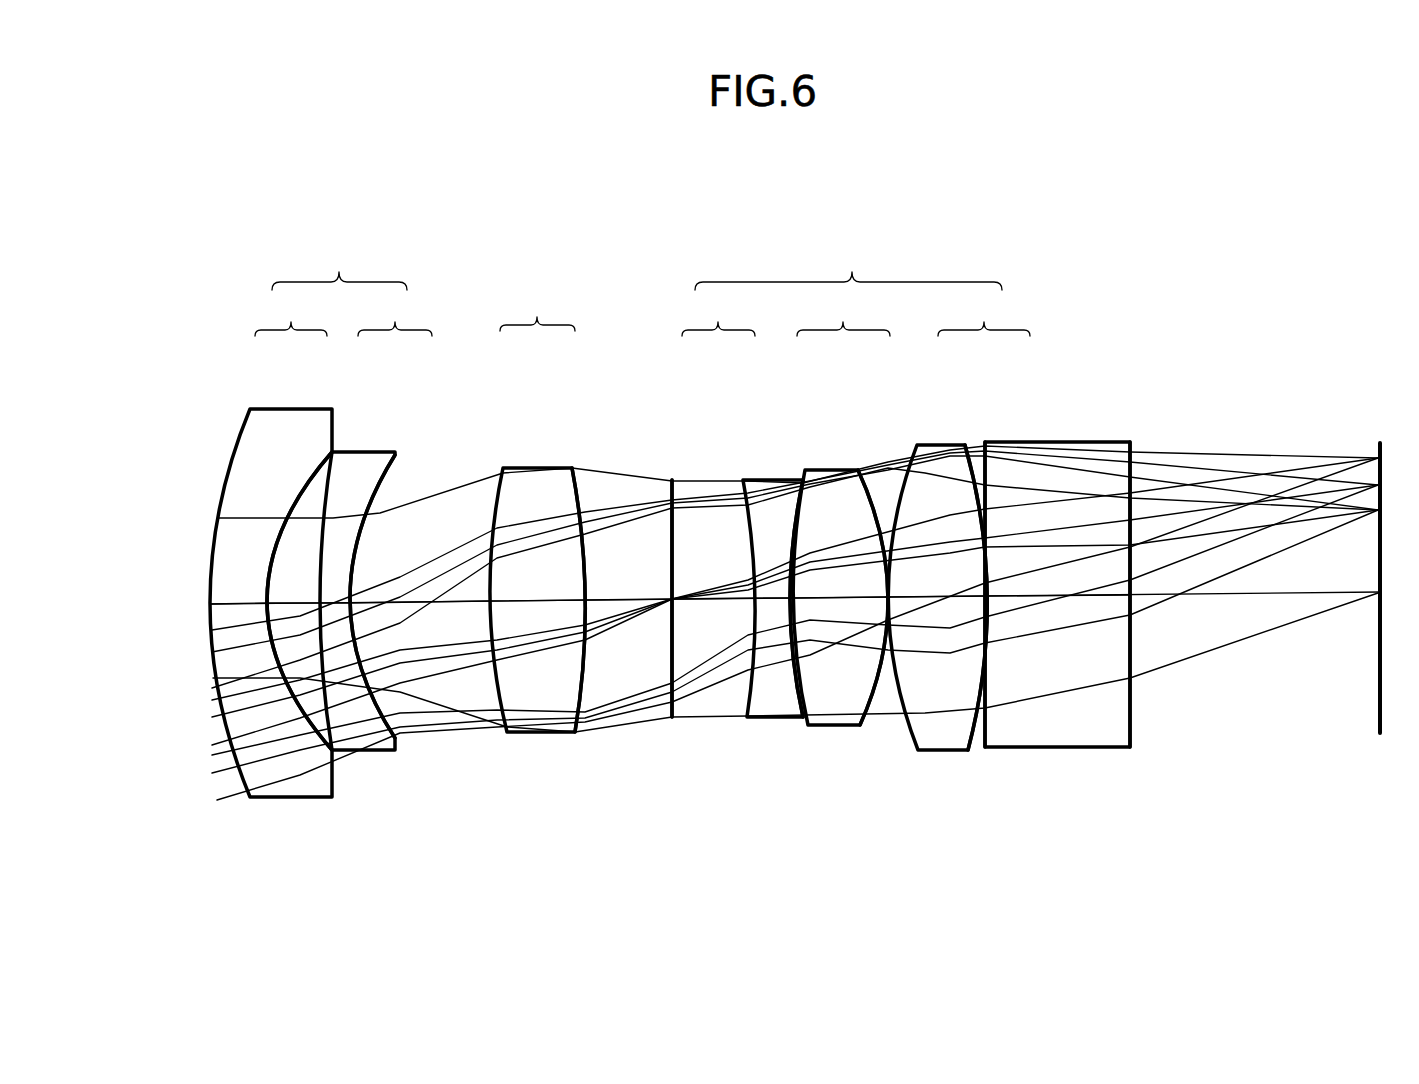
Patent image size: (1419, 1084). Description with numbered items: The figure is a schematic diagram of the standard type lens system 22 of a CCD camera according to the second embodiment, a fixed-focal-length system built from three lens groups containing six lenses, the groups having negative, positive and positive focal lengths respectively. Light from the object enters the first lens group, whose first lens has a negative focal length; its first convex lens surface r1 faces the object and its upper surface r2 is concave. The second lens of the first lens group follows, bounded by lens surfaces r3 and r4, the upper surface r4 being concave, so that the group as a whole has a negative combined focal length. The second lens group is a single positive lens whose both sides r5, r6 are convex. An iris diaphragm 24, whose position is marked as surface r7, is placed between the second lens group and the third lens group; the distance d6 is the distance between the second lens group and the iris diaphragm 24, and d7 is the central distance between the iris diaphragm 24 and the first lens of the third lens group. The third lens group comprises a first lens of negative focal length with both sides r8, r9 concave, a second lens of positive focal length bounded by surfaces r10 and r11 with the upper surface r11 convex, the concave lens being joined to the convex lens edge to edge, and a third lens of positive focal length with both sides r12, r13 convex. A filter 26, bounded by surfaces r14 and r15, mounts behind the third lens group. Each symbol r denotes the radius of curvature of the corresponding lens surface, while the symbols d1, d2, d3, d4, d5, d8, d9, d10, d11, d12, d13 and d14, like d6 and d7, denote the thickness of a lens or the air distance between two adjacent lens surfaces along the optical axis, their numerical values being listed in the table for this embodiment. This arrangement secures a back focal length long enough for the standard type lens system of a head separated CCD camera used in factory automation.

The standard type lens system 22 is at (497, 199).
The iris diaphragm 24 is at (672, 720).
The filter 26 is at (1107, 745).
The first convex lens surface r1 is at (202, 512).
The upper surface of first lens r2 is at (262, 585).
The lens surface r3 is at (318, 585).
The upper surface of second lens r4 is at (349, 572).
The lens surface r5 is at (488, 587).
The lens surface r6 is at (597, 580).
The lens surface r7 is at (664, 575).
The lens surface r8 is at (740, 565).
The lens surface r9 is at (787, 555).
The lens surface r10 is at (808, 560).
The upper surface of second lens of third group r11 is at (888, 560).
The lens surface r12 is at (890, 553).
The lens surface r13 is at (967, 497).
The lens surface r14 is at (985, 495).
The lens surface r15 is at (1130, 531).
The thickness between adjacent lens surfaces d1 is at (240, 607).
The distance between adjacent lens surfaces d2 is at (290, 607).
The thickness between adjacent lens surfaces d3 is at (333, 607).
The distance between adjacent lens surfaces d4 is at (420, 606).
The thickness between adjacent lens surfaces d5 is at (537, 605).
The distance between second lens group and iris diaphragm d6 is at (620, 604).
The central distance between iris diaphragm and first lens of third group d7 is at (710, 603).
The thickness between adjacent lens surfaces d8 is at (770, 603).
The distance between adjacent lens surfaces d9 is at (795, 602).
The thickness between adjacent lens surfaces d10 is at (840, 602).
The distance between adjacent lens surfaces d11 is at (888, 601).
The thickness between adjacent lens surfaces d12 is at (937, 600).
The distance between adjacent lens surfaces d13 is at (988, 600).
The thickness between adjacent lens surfaces d14 is at (1058, 599).